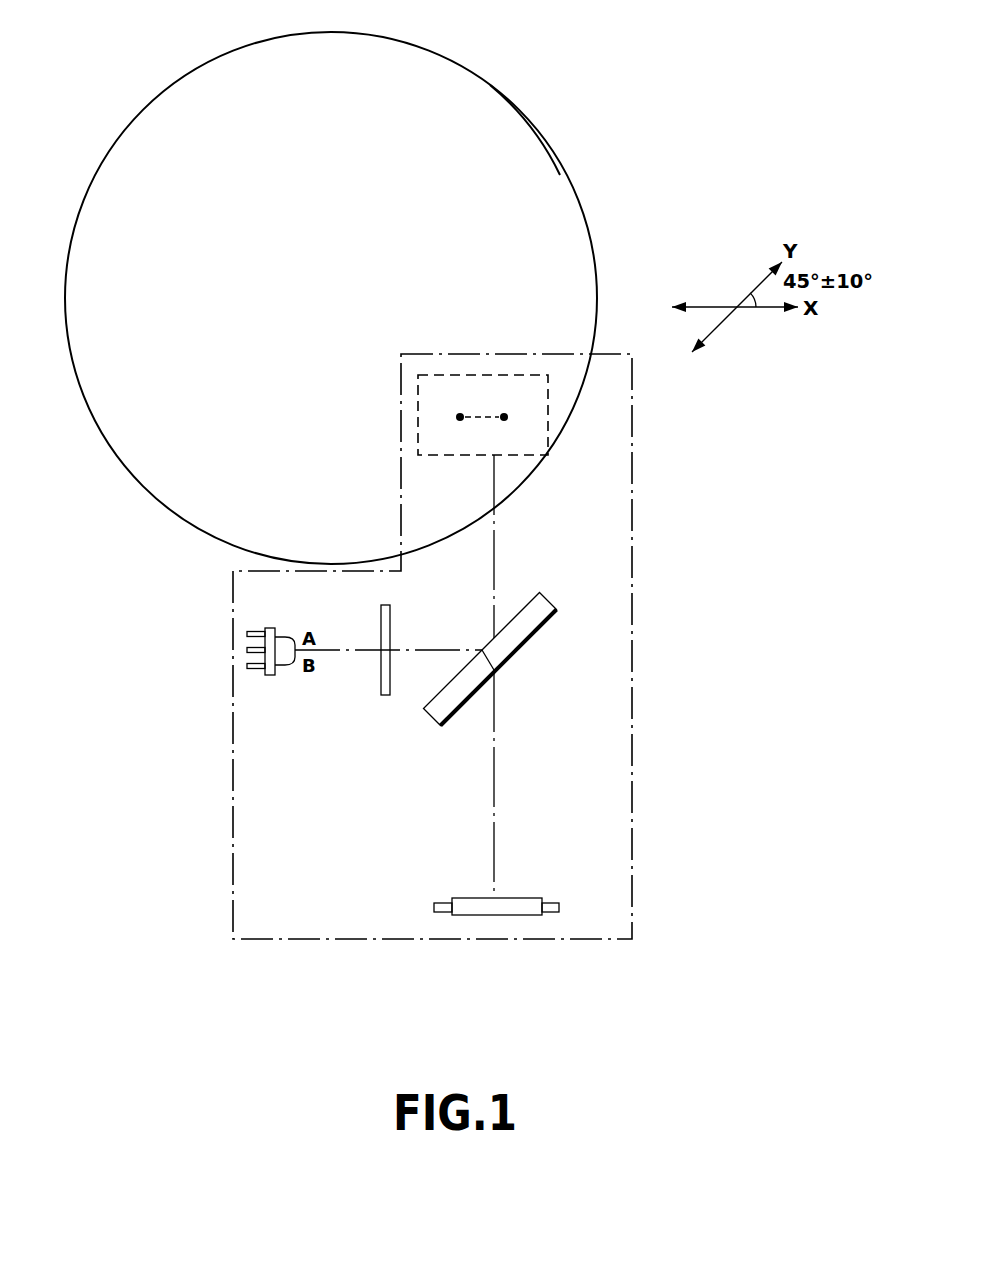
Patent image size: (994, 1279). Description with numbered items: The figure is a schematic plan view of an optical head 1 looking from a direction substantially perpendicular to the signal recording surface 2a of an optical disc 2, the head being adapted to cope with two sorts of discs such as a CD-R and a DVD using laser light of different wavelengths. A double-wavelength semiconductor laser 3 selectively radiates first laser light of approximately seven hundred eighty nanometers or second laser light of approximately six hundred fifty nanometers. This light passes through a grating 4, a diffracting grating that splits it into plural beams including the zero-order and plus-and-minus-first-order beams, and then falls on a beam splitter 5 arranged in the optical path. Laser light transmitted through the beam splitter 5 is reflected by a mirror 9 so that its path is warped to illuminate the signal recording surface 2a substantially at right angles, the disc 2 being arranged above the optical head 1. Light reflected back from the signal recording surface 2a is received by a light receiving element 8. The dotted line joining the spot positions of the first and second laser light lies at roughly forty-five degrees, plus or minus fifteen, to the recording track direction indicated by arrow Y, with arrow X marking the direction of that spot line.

The optical head 1 is at (633, 578).
The optical disc 2 is at (145, 105).
The signal recording surface 2a is at (525, 168).
The double-wavelength semiconductor laser 3 is at (272, 677).
The grating 4 is at (385, 697).
The beam splitter 5 is at (523, 645).
The light receiving element 8 is at (553, 898).
The mirror 9 is at (548, 403).